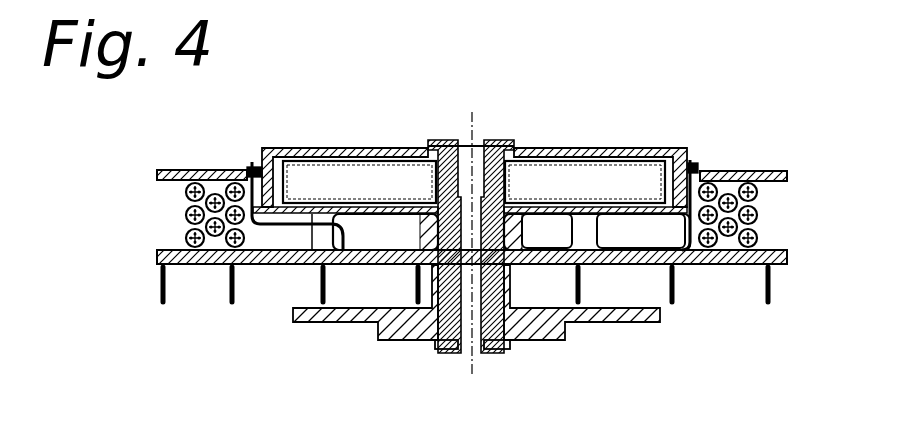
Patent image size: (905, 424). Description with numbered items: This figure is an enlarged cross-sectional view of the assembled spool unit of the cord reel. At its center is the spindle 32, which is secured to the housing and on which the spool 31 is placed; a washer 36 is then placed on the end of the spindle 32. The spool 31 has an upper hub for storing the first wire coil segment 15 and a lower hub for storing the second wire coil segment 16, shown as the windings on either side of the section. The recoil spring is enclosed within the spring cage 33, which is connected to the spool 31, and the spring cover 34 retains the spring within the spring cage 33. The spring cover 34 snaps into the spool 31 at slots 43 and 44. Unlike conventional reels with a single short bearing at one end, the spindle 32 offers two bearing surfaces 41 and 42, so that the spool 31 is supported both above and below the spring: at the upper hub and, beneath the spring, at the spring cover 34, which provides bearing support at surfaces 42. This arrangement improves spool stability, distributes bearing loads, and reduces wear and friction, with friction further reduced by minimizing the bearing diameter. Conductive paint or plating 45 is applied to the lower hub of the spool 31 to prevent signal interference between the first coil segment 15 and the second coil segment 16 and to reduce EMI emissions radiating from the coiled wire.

The first wire coil segment 15 is at (162, 290).
The second wire coil segment 16 is at (185, 214).
The spool 31 is at (200, 171).
The spindle 32 is at (488, 354).
The spring cage 33 is at (305, 180).
The spring cover 34 is at (275, 148).
The washer 36 is at (443, 350).
The bearing surface 41 is at (436, 332).
The bearing surface 42 is at (414, 152).
The slot 43 is at (250, 160).
The slot 44 is at (695, 164).
The conductive paint or plating 45 is at (277, 220).